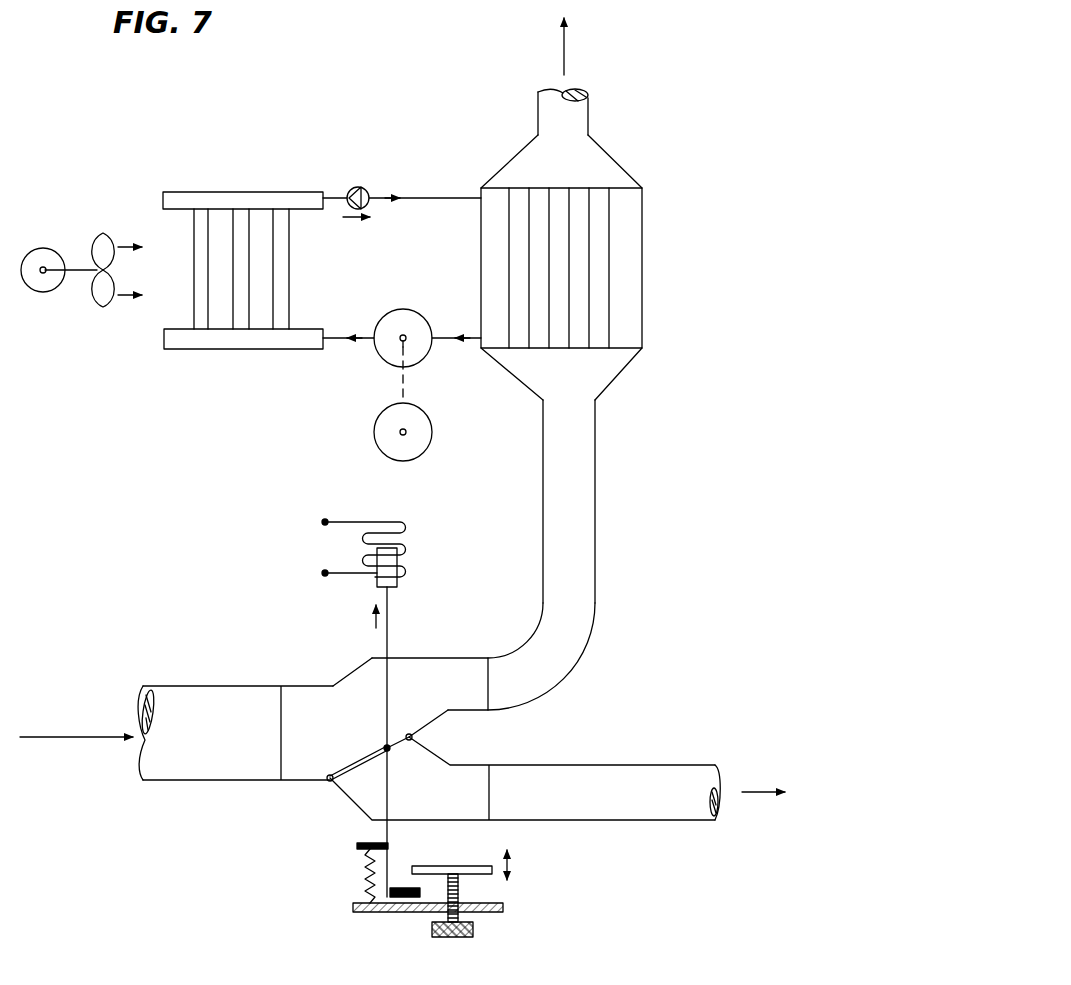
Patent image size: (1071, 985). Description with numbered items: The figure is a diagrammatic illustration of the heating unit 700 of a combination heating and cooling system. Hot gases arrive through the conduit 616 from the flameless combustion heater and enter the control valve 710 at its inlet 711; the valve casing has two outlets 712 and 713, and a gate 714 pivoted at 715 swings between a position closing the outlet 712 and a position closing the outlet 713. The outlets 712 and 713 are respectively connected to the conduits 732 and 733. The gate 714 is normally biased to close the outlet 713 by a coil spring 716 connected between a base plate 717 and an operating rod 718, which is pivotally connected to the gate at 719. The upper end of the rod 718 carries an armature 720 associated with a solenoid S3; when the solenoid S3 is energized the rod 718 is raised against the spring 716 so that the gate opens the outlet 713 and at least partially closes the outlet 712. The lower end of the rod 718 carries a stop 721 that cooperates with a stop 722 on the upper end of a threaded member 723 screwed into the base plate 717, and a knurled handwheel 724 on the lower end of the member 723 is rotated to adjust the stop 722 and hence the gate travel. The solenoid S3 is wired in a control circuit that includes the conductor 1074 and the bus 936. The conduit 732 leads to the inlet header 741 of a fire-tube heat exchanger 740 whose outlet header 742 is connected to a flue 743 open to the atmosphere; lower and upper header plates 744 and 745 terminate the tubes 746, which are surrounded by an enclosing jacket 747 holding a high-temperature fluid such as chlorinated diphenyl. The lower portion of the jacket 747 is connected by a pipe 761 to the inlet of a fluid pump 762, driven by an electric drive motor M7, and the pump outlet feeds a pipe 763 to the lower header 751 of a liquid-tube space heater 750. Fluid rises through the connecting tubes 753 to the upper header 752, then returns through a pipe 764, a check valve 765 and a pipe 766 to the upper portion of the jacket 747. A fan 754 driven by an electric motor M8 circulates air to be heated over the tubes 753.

The heating unit 700 is at (342, 372).
The space heater 750 is at (250, 192).
The lower header 751 is at (170, 346).
The upper header 752 is at (163, 197).
The connecting tubes 753 is at (245, 249).
The fan 754 is at (105, 270).
The electric motor M8 is at (46, 292).
The pipe 764 is at (336, 196).
The check valve 765 is at (370, 188).
The pipe 766 is at (437, 199).
The pipe 761 is at (445, 342).
The pipe 763 is at (334, 340).
The fluid pump 762 is at (390, 339).
The electric drive motor M7 is at (427, 455).
The heat exchanger 740 is at (623, 145).
The inlet header 741 is at (597, 400).
The outlet header 742 is at (538, 133).
The flue 743 is at (538, 112).
The lower header plate 744 is at (620, 350).
The upper header plate 745 is at (612, 193).
The tubes 746 is at (560, 258).
The enclosing jacket 747 is at (481, 295).
The conduit 732 is at (562, 668).
The conduit 733 is at (650, 820).
The conduit 616 is at (138, 765).
The inlet 711 is at (300, 686).
The outlet 712 is at (447, 658).
The outlet 713 is at (475, 765).
The control valve 710 is at (318, 795).
The gate 714 is at (357, 762).
The pivot 715 is at (415, 738).
The operating rod 718 is at (387, 795).
The pivotal connection 719 is at (390, 745).
The armature 720 is at (398, 583).
The solenoid S3 is at (417, 545).
The conductor 1074 is at (337, 520).
The bus 936 is at (350, 575).
The coil spring 716 is at (365, 885).
The base plate 717 is at (383, 912).
The stop 721 is at (398, 888).
The stop 722 is at (440, 866).
The threaded member 723 is at (460, 884).
The knurled handwheel 724 is at (460, 937).